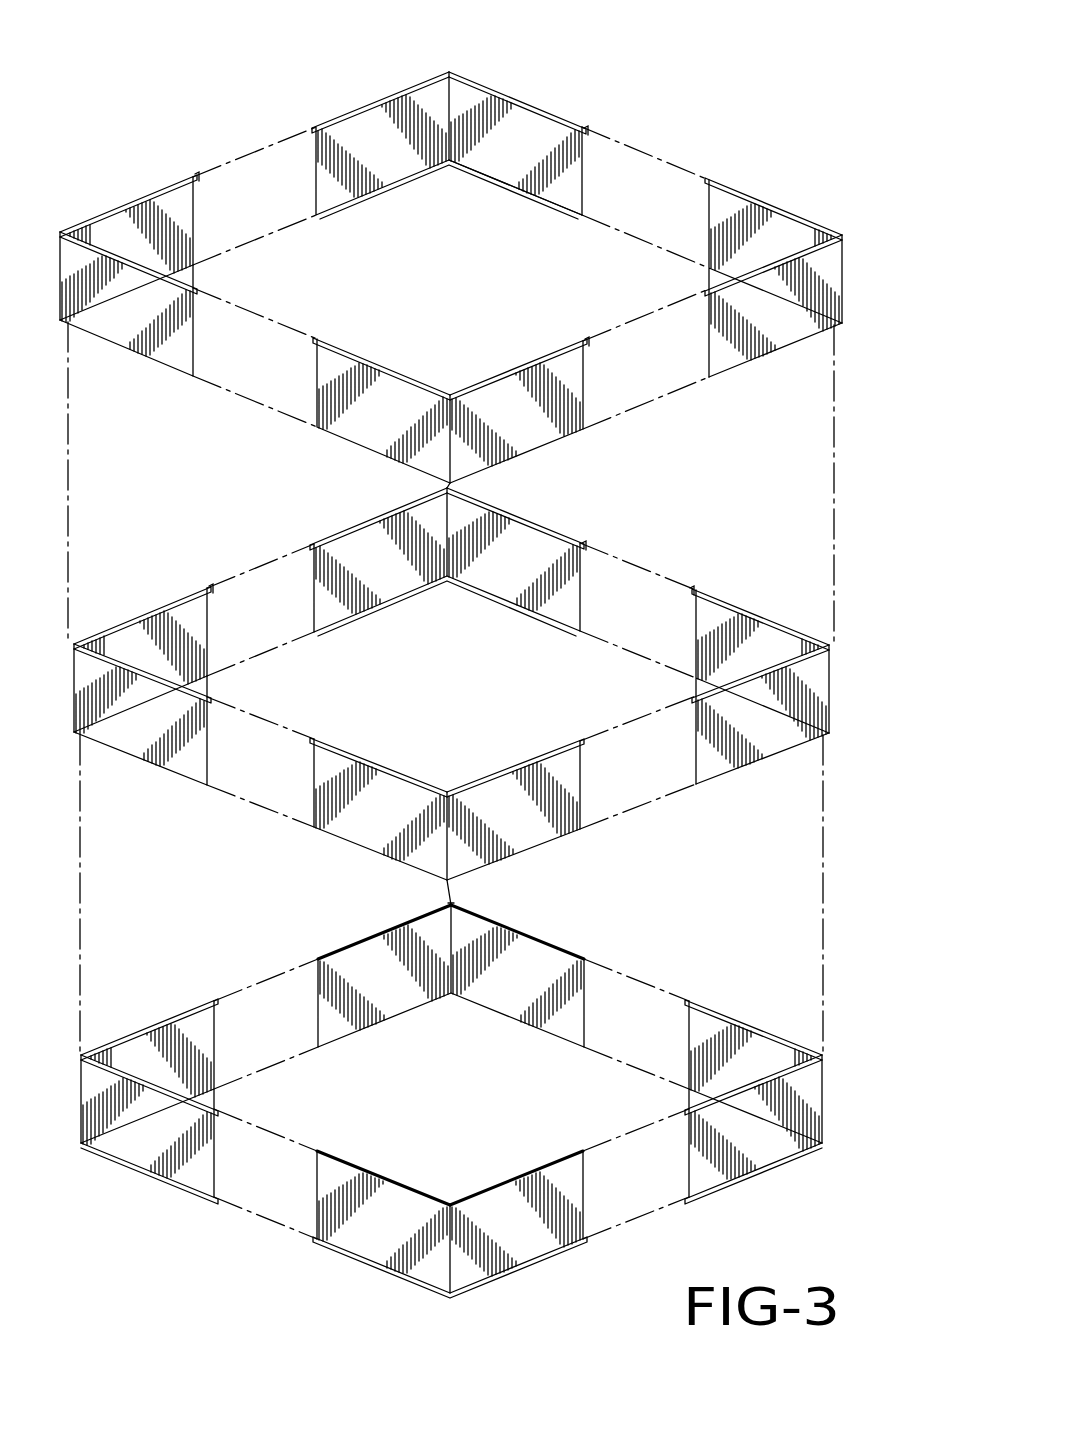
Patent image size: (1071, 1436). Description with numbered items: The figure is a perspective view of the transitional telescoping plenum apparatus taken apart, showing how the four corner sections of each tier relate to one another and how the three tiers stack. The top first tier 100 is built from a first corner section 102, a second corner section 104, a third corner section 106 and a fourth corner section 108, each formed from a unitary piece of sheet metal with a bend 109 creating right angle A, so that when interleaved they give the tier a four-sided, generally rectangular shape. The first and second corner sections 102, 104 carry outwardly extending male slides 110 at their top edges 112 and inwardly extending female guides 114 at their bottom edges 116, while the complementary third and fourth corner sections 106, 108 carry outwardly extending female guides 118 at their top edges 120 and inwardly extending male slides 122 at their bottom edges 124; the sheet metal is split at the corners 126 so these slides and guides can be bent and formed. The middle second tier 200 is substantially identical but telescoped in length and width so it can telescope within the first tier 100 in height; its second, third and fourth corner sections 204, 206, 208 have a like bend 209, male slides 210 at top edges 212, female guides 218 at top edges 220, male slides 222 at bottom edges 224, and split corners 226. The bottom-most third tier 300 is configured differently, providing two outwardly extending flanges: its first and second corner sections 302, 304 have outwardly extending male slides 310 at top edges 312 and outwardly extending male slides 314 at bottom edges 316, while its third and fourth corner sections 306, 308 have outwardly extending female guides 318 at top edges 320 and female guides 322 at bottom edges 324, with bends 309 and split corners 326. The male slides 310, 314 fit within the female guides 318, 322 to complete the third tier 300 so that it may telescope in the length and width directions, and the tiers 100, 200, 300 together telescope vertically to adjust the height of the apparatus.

The first tier 100 is at (97, 128).
The first corner section 102 is at (475, 100).
The second corner section 104 is at (541, 418).
The third corner section 106 is at (131, 307).
The fourth corner section 108 is at (774, 315).
The bend 109 is at (450, 95).
The male slides 110 is at (586, 127).
The top edges 112 is at (541, 105).
The female guides 114 is at (562, 212).
The bottom edges 116 is at (484, 170).
The female guides 118 is at (107, 208).
The top edges 120 is at (178, 186).
The male slides 122 is at (179, 278).
The bottom edges 124 is at (191, 258).
The corners 126 is at (451, 95).
The second tier 200 is at (146, 528).
The second corner section 204 is at (383, 819).
The third corner section 206 is at (142, 733).
The fourth corner section 208 is at (797, 742).
The bend 209 is at (830, 706).
The male slides 210 is at (586, 539).
The top edges 212 is at (549, 519).
The female guides 218 is at (112, 624).
The top edges 220 is at (205, 597).
The male slides 222 is at (185, 688).
The bottom edges 224 is at (178, 774).
The corners 226 is at (446, 493).
The third tier 300 is at (164, 972).
The first corner section 302 is at (472, 928).
The second corner section 304 is at (520, 1240).
The third corner section 306 is at (146, 1135).
The fourth corner section 308 is at (703, 1175).
The bend 309 is at (824, 1118).
The male slides 310 is at (565, 948).
The top edges 312 is at (547, 936).
The male slides 314 is at (405, 1282).
The bottom edges 316 is at (402, 1012).
The female guides 318 is at (101, 1074).
The top edges 320 is at (130, 1078).
The female guides 322 is at (201, 1199).
The bottom edges 324 is at (167, 1168).
The corners 326 is at (452, 905).